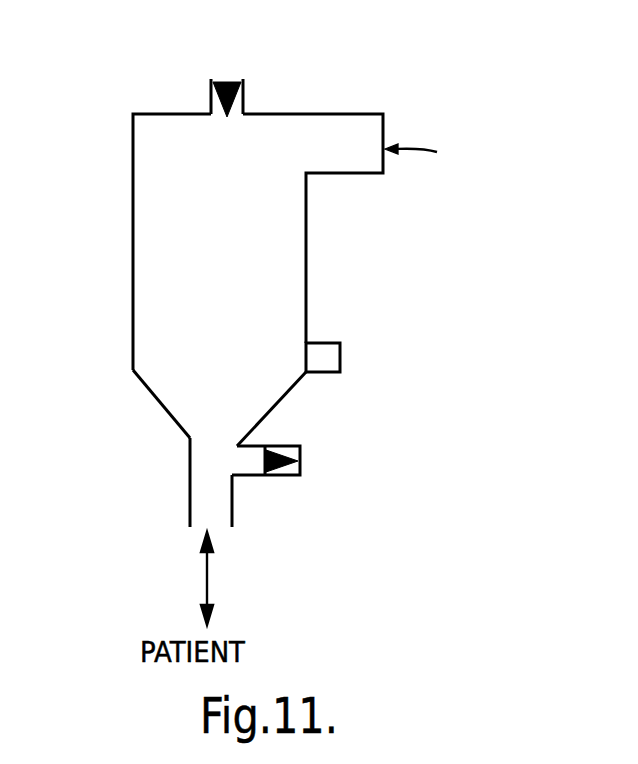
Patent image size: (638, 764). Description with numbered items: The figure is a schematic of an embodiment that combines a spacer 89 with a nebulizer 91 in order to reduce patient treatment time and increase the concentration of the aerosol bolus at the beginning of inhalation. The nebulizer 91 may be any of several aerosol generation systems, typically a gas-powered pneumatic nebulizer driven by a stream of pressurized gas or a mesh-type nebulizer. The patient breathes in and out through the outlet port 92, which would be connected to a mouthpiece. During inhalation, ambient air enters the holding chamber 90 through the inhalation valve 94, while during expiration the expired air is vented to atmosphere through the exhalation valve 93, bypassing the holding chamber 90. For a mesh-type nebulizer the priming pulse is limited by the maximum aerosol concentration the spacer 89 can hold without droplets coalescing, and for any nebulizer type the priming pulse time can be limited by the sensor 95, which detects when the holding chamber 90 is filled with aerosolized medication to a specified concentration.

The spacer 89 is at (130, 308).
The holding chamber 90 is at (190, 262).
The nebulizer 91 is at (357, 123).
The outlet port 92 is at (213, 512).
The exhalation valve 93 is at (278, 443).
The inhalation valve 94 is at (244, 60).
The sensor 95 is at (343, 347).